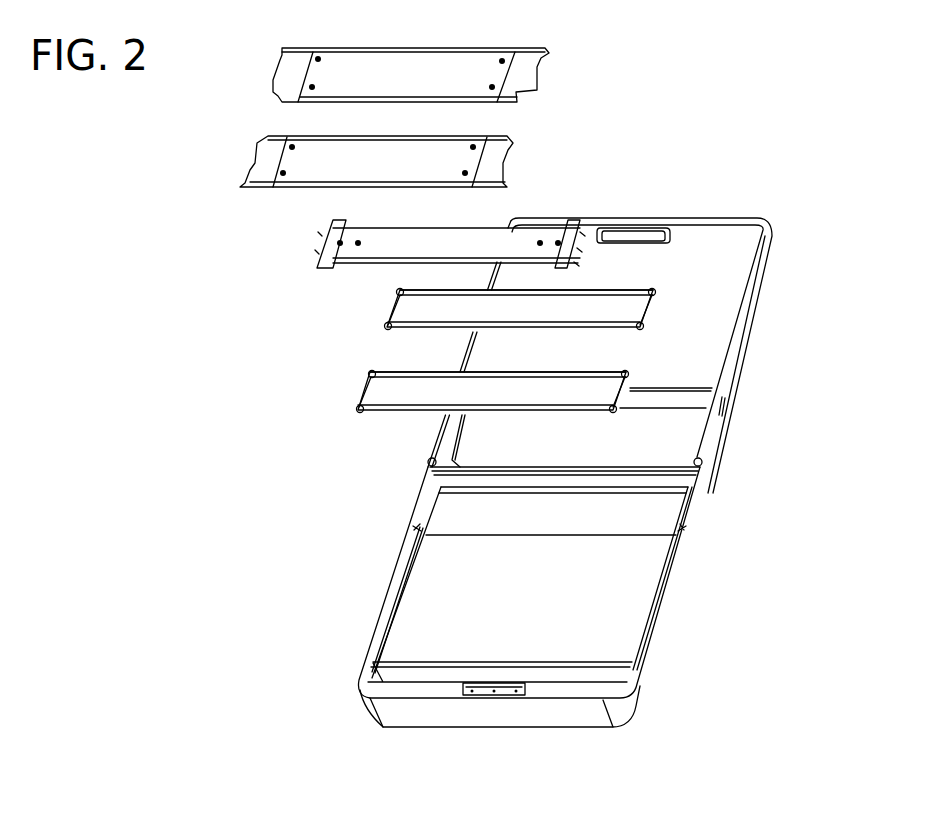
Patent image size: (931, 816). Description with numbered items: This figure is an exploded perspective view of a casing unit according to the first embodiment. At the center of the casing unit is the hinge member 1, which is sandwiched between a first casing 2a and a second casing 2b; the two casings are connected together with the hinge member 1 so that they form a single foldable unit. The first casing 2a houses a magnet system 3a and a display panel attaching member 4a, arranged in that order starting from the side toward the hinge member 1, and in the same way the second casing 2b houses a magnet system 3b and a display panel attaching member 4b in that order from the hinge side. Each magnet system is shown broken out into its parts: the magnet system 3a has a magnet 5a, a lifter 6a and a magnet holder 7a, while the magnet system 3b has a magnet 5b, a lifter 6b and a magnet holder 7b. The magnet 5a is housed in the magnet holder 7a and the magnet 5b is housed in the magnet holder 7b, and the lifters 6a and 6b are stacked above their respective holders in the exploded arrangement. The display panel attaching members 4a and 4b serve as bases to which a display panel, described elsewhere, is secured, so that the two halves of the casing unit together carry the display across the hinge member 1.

The hinge member 1 is at (523, 237).
The first casing 2a is at (745, 331).
The second casing 2b is at (668, 588).
The magnet system 3a is at (852, 143).
The magnet system 3b is at (162, 185).
The display panel attaching member 4a is at (690, 352).
The display panel attaching member 4b is at (615, 610).
The magnet 5a is at (627, 315).
The magnet 5b is at (387, 392).
The lifter 6a is at (527, 80).
The lifter 6b is at (250, 157).
The magnet holder 7a is at (613, 290).
The magnet holder 7b is at (400, 367).